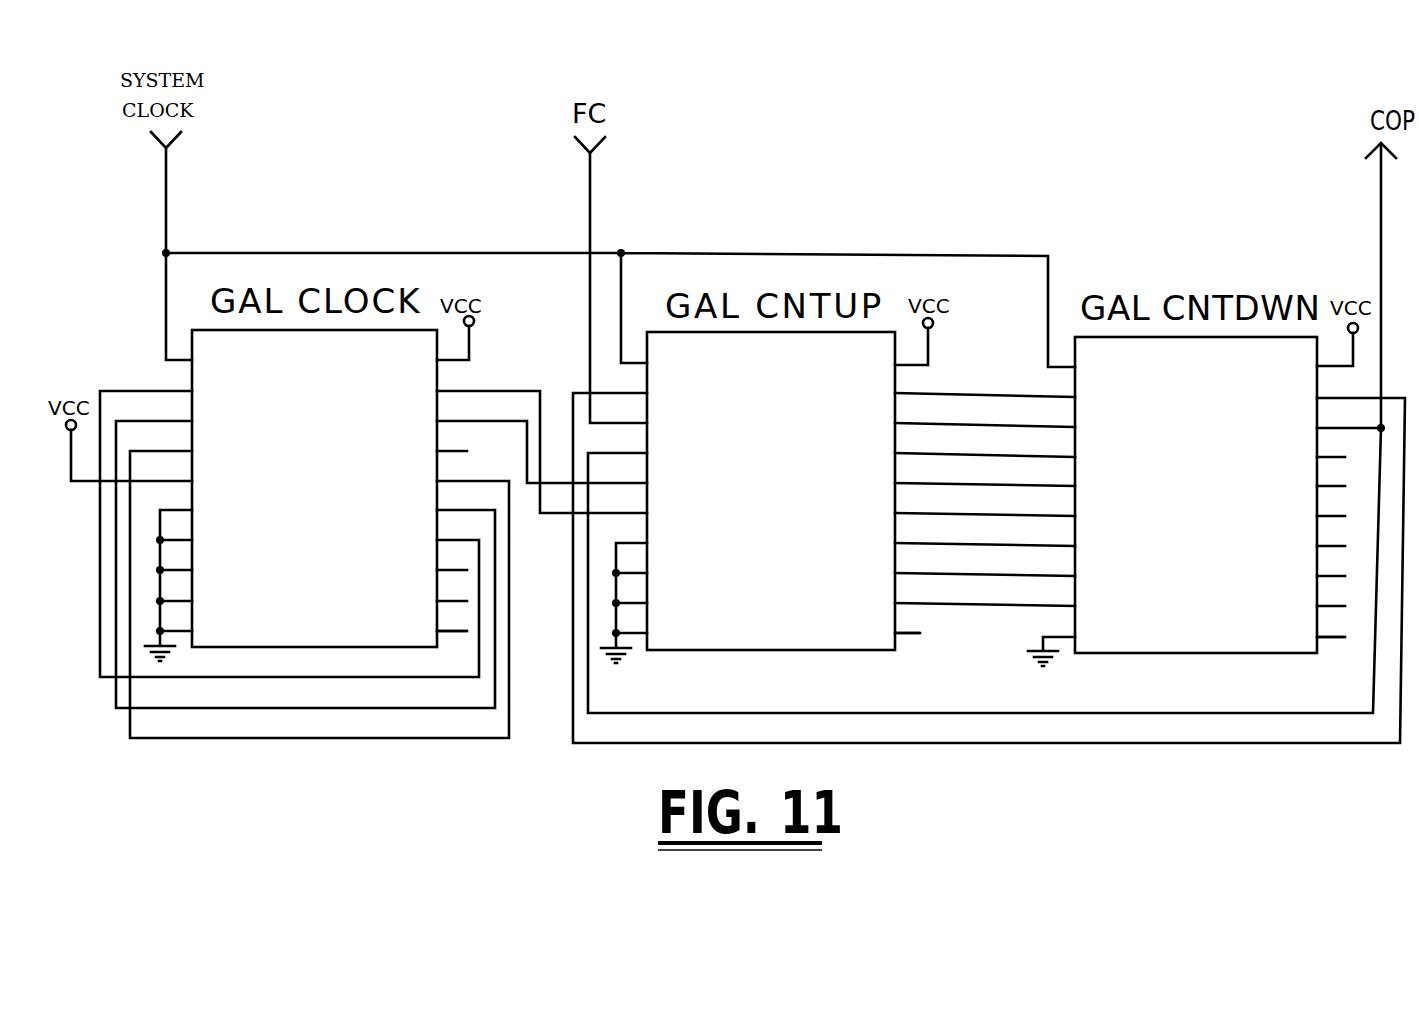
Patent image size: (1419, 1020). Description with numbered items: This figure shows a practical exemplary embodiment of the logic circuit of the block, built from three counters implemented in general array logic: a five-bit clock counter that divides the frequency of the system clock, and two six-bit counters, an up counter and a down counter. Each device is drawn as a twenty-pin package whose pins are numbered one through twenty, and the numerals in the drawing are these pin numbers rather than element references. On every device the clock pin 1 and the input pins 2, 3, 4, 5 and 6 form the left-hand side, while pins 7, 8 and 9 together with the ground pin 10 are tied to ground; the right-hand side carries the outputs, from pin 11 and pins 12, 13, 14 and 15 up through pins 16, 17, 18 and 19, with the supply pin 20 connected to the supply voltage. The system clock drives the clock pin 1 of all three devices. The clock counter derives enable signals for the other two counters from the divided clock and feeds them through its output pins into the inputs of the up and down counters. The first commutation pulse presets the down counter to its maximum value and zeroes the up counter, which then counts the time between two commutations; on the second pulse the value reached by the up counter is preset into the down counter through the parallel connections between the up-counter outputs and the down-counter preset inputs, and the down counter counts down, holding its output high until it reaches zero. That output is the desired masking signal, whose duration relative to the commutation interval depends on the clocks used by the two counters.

The pin 1 (CLK) 1 is at (653, 357).
The pin 2 is at (659, 388).
The pin 3 is at (672, 418).
The pin 4 is at (646, 448).
The pin 5 is at (646, 477).
The pin 6 is at (646, 507).
The pin 7 is at (646, 537).
The pin 8 is at (646, 567).
The pin 9 is at (646, 597).
The pin 10 (GND) 10 is at (650, 628).
The pin 11 is at (891, 627).
The pin 12 is at (864, 597).
The pin 13 is at (864, 567).
The pin 14 is at (864, 537).
The pin 15 is at (864, 507).
The pin 16 is at (864, 477).
The pin 17 is at (858, 448).
The pin 18 is at (847, 418).
The pin 19 is at (844, 388).
The pin 20 (+VCC) 20 is at (853, 357).